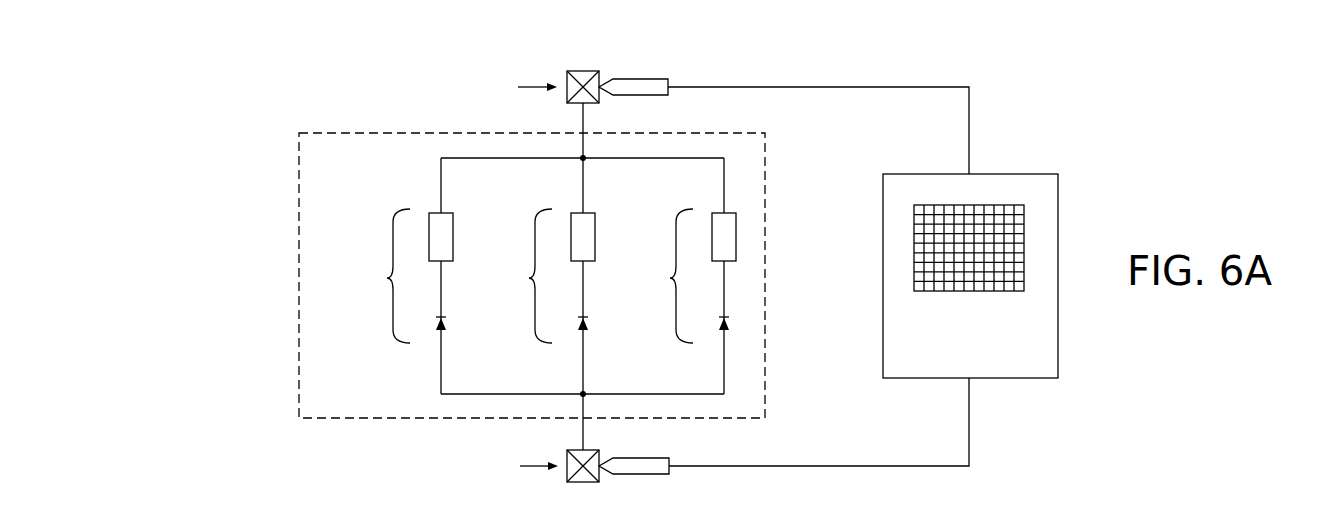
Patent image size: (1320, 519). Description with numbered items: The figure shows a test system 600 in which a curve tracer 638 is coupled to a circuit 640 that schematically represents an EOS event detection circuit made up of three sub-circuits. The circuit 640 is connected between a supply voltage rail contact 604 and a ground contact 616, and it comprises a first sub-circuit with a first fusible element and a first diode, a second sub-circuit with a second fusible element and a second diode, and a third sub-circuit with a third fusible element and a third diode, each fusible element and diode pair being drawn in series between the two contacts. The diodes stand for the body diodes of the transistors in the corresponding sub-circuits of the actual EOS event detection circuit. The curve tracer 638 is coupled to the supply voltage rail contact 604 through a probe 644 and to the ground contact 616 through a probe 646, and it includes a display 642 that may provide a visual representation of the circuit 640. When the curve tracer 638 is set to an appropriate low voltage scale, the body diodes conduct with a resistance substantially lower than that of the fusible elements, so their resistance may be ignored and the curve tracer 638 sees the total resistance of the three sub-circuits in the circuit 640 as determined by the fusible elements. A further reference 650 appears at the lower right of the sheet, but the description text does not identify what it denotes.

The test system 600 is at (1112, 73).
The supply voltage rail contact 604 is at (583, 70).
The probe 644 is at (645, 78).
The ground contact 616 is at (583, 483).
The probe 646 is at (640, 477).
The circuit 640 is at (766, 259).
The curve tracer 638 is at (1013, 378).
The display 642 is at (975, 291).
The curve 650 is at (1130, 518).